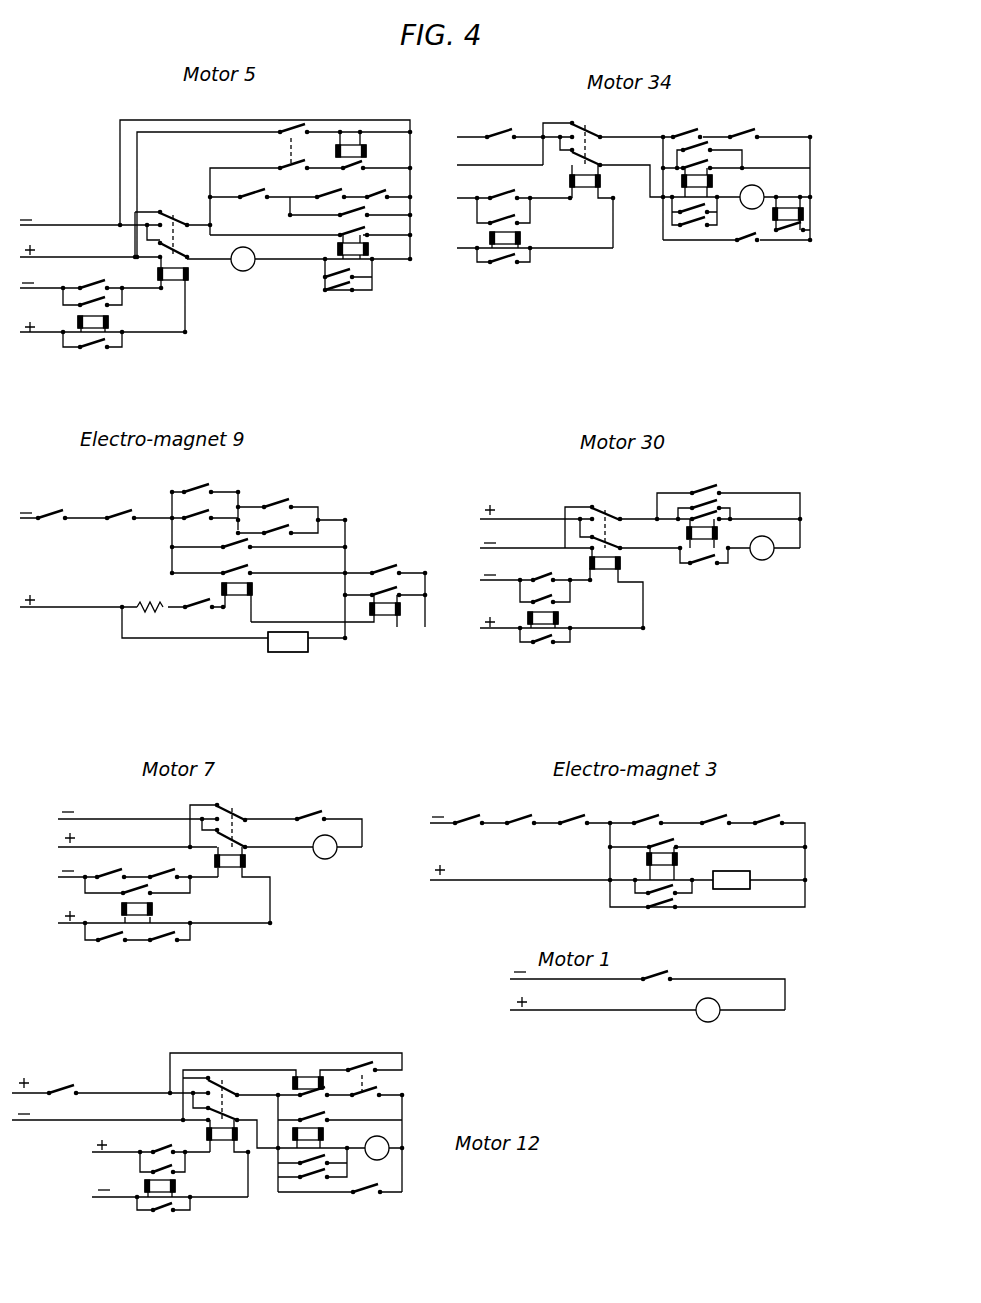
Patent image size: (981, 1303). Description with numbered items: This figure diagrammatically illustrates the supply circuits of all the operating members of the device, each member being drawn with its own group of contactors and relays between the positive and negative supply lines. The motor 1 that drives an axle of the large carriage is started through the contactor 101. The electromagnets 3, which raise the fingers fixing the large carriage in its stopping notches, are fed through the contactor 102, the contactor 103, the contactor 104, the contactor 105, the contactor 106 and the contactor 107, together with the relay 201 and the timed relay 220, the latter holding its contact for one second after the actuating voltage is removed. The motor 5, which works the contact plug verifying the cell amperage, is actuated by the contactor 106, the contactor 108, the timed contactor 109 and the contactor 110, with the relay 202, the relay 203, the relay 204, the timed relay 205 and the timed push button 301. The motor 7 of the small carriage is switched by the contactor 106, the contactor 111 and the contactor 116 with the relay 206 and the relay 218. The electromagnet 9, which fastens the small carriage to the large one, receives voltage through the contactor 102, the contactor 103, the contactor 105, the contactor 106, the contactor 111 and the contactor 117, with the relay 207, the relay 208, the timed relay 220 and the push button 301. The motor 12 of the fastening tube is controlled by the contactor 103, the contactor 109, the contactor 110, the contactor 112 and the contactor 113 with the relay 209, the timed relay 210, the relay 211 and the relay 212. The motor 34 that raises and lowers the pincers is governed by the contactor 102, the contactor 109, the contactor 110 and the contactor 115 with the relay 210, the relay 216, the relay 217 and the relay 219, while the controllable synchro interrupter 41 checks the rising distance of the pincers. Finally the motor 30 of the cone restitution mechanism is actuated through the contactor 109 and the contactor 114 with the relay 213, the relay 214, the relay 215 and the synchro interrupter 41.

The motor 5 is at (243, 271).
The motor 34 is at (758, 190).
The electromagnet 9 is at (292, 653).
The motor 30 is at (770, 558).
The motor 7 is at (325, 860).
The electromagnet 3 is at (745, 889).
The motor 1 is at (699, 1018).
The motor 12 is at (392, 1143).
The contactor 101 is at (675, 977).
The contactor 102 is at (503, 267).
The contactor 103 is at (118, 512).
The contactor 104 is at (93, 350).
The contactor 105 is at (180, 524).
The contactor 106 is at (252, 202).
The contactor 107 is at (690, 910).
The contactor 108 is at (97, 286).
The contactor 109 is at (347, 219).
The contactor 110 is at (293, 128).
The contactor 111 is at (200, 605).
The contactor 112 is at (168, 1150).
The contactor 113 is at (745, 132).
The contactor 114 is at (703, 568).
The contactor 115 is at (503, 195).
The contactor 116 is at (307, 815).
The contactor 117 is at (244, 554).
The relay 201 is at (683, 133).
The relay 202 is at (110, 323).
The relay 203 is at (188, 277).
The relay 204 is at (366, 252).
The relay 205 is at (362, 147).
The relay 206 is at (158, 910).
The relay 207 is at (258, 590).
The relay 208 is at (385, 618).
The relay 209 is at (147, 1184).
The relay 210 is at (312, 1075).
The relay 211 is at (329, 1133).
The relay 212 is at (222, 1142).
The relay 213 is at (685, 533).
The relay 214 is at (560, 618).
The relay 215 is at (622, 563).
The relay 216 is at (520, 238).
The relay 217 is at (710, 181).
The relay 218 is at (250, 862).
The relay 219 is at (600, 181).
The relay 220 is at (805, 222).
The push button 301 is at (380, 190).
The synchro circuit interrupter 41 is at (678, 210).